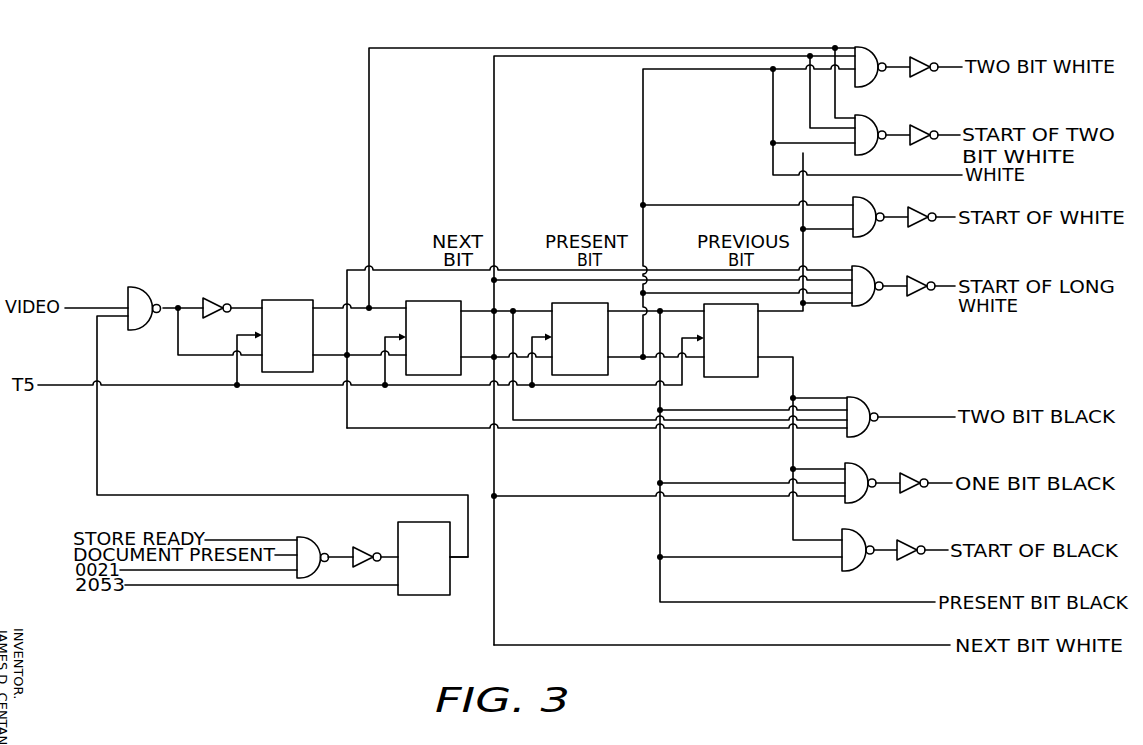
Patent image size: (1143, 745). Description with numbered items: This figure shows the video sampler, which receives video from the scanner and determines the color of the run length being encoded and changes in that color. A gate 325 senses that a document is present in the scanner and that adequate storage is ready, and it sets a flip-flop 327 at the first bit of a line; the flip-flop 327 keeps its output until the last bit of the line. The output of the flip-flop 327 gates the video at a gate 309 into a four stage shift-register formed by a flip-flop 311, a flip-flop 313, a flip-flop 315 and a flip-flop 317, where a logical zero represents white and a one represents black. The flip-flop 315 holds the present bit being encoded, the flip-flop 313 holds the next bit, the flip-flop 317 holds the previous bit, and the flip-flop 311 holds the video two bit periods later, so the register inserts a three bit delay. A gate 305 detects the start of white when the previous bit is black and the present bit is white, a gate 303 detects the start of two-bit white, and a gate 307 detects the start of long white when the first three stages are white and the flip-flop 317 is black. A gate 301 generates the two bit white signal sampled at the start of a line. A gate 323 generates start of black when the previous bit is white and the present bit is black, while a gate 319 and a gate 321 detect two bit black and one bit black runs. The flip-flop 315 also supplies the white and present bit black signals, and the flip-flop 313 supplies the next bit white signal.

The gate 301 is at (878, 53).
The gate 303 is at (872, 121).
The gate 305 is at (875, 206).
The gate 307 is at (870, 271).
The gate 309 is at (145, 289).
The flip-flop 311 is at (270, 299).
The flip-flop 313 is at (432, 301).
The flip-flop 315 is at (578, 303).
The flip-flop 317 is at (760, 341).
The gate 319 is at (870, 401).
The gate 321 is at (864, 467).
The gate 323 is at (862, 535).
The gate 325 is at (320, 538).
The flip-flop 327 is at (422, 596).